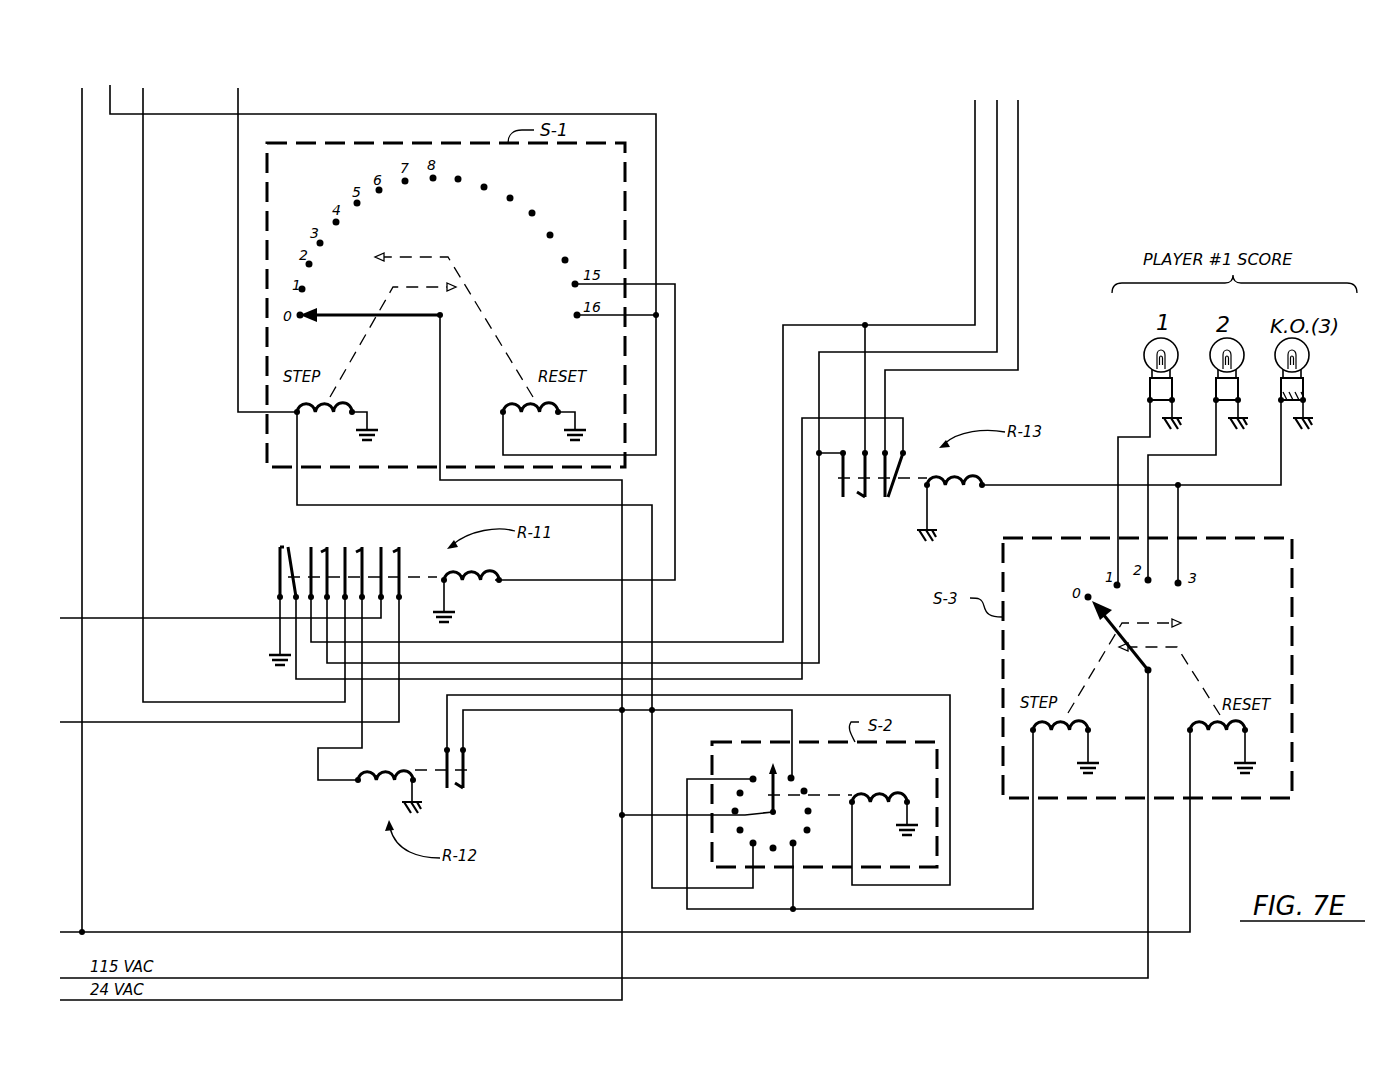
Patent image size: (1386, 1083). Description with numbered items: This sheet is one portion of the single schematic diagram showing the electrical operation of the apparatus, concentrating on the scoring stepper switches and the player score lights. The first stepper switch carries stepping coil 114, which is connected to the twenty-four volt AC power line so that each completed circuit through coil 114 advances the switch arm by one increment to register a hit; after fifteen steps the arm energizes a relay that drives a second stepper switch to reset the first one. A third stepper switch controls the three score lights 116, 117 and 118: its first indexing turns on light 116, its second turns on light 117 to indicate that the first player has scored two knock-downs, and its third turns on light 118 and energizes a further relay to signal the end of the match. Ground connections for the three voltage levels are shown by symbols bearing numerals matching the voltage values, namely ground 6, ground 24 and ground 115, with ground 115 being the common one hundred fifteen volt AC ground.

The 6v ground connection symbol 6 is at (266, 663).
The 24v AC ground connection symbol 24 is at (378, 440).
The stepping coil 114 is at (350, 393).
The 115v AC ground connection symbol 115 is at (400, 800).
The score light 116 is at (1144, 357).
The score light 117 is at (1214, 354).
The score light 118 is at (1308, 363).